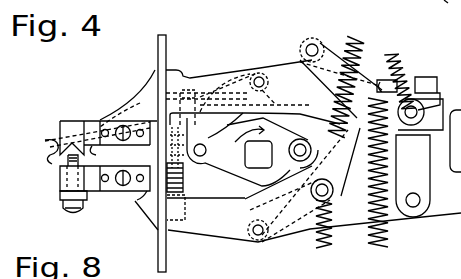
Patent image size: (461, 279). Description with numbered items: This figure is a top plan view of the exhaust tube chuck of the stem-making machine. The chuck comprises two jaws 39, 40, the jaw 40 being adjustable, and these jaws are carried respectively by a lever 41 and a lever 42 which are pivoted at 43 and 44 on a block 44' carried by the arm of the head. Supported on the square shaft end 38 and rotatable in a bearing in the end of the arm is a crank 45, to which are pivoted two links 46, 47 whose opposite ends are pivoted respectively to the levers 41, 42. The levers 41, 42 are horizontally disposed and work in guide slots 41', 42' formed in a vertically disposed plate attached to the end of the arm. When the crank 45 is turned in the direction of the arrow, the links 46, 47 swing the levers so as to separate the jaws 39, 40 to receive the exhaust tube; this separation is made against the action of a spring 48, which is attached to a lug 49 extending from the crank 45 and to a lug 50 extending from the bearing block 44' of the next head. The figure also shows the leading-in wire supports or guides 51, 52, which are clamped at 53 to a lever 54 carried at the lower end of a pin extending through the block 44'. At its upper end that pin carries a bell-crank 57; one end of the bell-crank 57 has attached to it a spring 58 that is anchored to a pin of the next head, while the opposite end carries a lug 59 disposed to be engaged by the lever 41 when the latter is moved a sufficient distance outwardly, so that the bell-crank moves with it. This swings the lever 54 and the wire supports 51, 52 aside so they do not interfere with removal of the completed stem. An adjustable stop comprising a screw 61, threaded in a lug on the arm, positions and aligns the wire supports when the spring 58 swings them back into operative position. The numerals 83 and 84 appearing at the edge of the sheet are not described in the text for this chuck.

The square shaft end 38 is at (260, 166).
The jaw 39 is at (63, 121).
The jaw 40 is at (60, 180).
The lever 41 is at (200, 77).
The guide slot 41′ is at (144, 146).
The lever 42 is at (215, 232).
The guide slot 42′ is at (143, 208).
The pivot 43 is at (416, 104).
The pivot 44 is at (413, 208).
The block 44′ is at (395, 177).
The crank 45 is at (232, 175).
The link 46 is at (212, 140).
The link 47 is at (268, 195).
The spring 48 is at (356, 38).
The lug 49 is at (318, 147).
The lug 50 is at (381, 81).
The leading-in wire support 51 is at (45, 140).
The leading-in wire support 52 is at (96, 155).
The clamp 53 is at (190, 93).
The lever 54 is at (277, 74).
The bell-crank 57 is at (328, 194).
The spring 58 is at (391, 53).
The lug 59 is at (312, 45).
The screw 61 is at (183, 177).
The member 83 is at (460, 178).
The member 84 is at (454, 163).